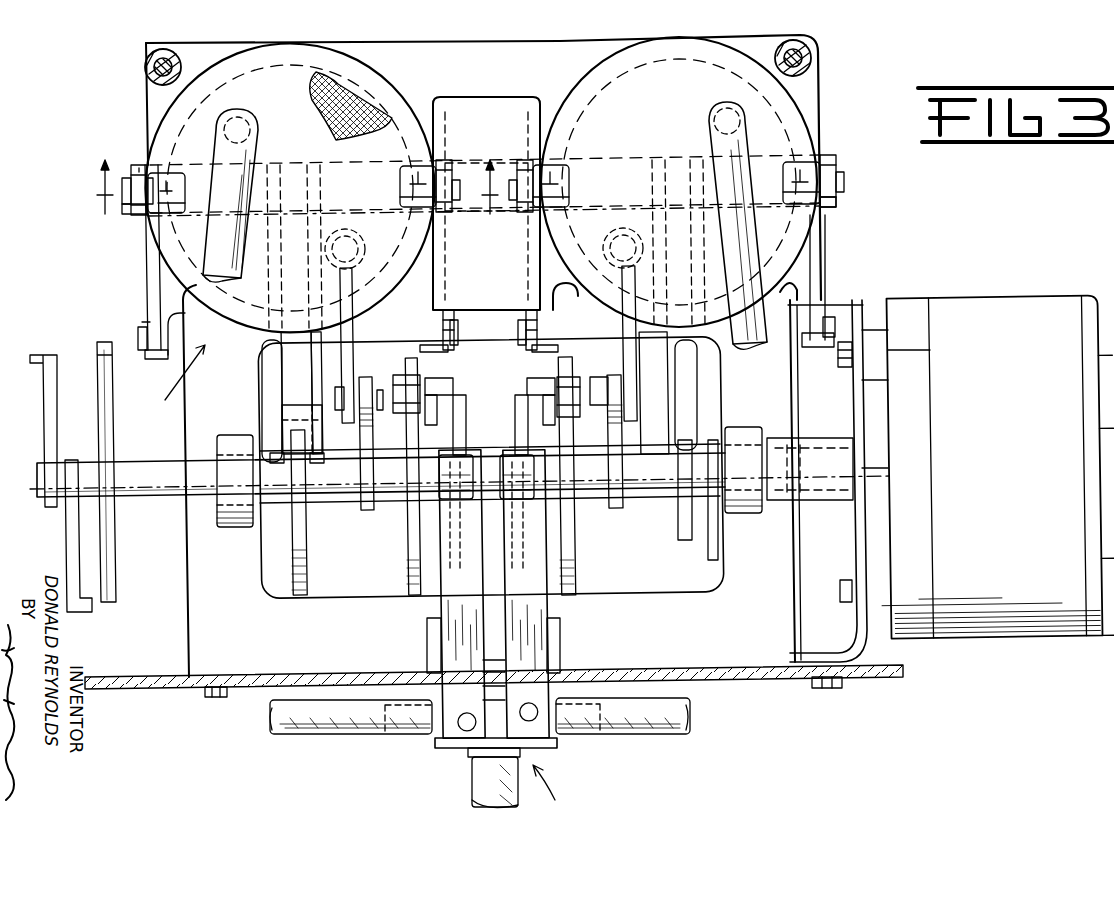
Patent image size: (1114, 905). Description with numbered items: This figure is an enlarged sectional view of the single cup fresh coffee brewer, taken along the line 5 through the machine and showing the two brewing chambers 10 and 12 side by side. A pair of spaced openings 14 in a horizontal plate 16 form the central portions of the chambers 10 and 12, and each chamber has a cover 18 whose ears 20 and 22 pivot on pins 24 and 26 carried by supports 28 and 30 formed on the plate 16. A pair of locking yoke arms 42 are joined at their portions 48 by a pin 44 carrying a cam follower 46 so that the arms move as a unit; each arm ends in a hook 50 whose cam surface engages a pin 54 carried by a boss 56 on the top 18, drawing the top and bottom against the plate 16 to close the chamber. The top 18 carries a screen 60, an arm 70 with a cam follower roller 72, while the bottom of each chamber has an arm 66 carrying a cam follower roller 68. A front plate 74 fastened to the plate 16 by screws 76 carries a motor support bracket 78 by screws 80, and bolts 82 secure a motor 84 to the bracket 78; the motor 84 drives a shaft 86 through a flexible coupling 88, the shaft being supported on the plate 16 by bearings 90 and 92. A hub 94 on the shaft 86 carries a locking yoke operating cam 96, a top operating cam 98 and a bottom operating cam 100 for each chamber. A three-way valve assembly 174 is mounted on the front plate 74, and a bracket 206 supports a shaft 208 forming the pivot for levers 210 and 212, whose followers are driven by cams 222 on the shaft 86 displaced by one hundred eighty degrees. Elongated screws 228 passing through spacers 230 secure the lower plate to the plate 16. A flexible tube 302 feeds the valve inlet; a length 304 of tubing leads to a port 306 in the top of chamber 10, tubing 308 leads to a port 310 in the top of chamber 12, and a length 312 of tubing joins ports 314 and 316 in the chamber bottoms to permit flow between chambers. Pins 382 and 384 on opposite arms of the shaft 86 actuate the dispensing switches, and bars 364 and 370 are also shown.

The section line 5- 5 is at (297, 175).
The brewing chamber 10 is at (173, 381).
The brewing chamber 12 is at (838, 127).
The spaced openings 14 is at (276, 72).
The horizontal plate 16 is at (185, 555).
The cover 18 is at (408, 118).
The ears 20 is at (152, 360).
The ears 22 is at (445, 351).
The pins 24 is at (810, 344).
The pins 26 is at (456, 336).
The supports 28 is at (145, 327).
The supports 30 is at (528, 310).
The locking yoke arms 42 is at (138, 164).
The pin 44 is at (265, 423).
The cam follower 46 is at (305, 470).
The portions of the arms 48 is at (300, 332).
The hook 50 is at (135, 216).
The pin 54 is at (128, 204).
The boss 56 is at (180, 170).
The screen 60 is at (368, 96).
The arm 66 is at (428, 372).
The cam follower roller 68 is at (402, 375).
The arm 70 is at (352, 340).
The cam follower roller 72 is at (368, 377).
The front plate 74 is at (800, 680).
The screws 76 is at (214, 698).
The motor support bracket 78 is at (862, 540).
The screws 80 is at (834, 690).
The bolts 82 is at (846, 342).
The motor 84 is at (965, 297).
The shaft 86 is at (712, 500).
The flexible coupling 88 is at (815, 500).
The bearing 90 is at (236, 527).
The bearing 92 is at (748, 513).
The hub 94 is at (390, 510).
The locking yoke operating cam 96 is at (306, 578).
The top operating cam 98 is at (373, 430).
The bottom operating cam 100 is at (424, 580).
The three-way valve assembly 174 is at (564, 783).
The bracket 206 is at (560, 658).
The shaft 208 is at (560, 638).
The lever 210 is at (440, 604).
The lever 212 is at (548, 606).
The cam 222 is at (470, 398).
The elongated screws 228 is at (180, 52).
The spacers 230 is at (160, 56).
The flexible tube 302 is at (472, 780).
The length of flexible tubing 304 is at (254, 162).
The port 306 is at (250, 120).
The length of tubing 308 is at (715, 140).
The port 310 is at (733, 110).
The length of tubing 312 is at (596, 222).
The port 314 is at (345, 214).
The port 316 is at (650, 222).
The bar 364 is at (110, 429).
The bar 370 is at (100, 350).
The pin 382 is at (40, 355).
The pin 384 is at (92, 604).